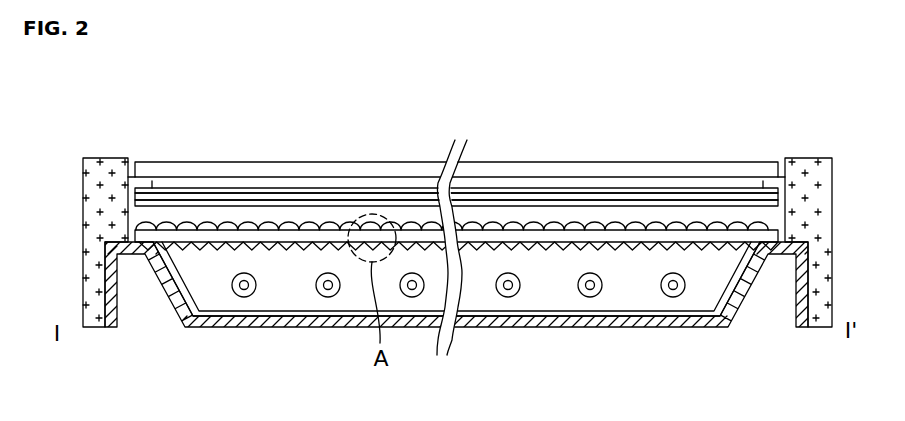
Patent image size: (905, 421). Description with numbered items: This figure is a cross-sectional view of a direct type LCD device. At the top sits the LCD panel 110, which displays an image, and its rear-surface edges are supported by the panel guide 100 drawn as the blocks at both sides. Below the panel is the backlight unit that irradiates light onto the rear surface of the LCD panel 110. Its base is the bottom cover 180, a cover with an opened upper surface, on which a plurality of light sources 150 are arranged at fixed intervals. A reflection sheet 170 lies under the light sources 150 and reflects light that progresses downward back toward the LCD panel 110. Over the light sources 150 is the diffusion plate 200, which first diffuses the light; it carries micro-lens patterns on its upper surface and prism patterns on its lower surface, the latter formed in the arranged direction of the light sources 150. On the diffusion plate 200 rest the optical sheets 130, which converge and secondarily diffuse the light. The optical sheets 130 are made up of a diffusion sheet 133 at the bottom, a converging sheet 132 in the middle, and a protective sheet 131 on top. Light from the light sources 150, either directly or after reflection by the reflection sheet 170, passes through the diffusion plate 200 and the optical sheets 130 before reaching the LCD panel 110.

The panel guide 100 is at (810, 158).
The LCD panel 110 is at (608, 172).
The optical sheets 130 is at (456, 140).
The protective sheet 131 is at (225, 191).
The converging sheet 132 is at (271, 197).
The diffusion sheet 133 is at (235, 113).
The light sources 150 is at (508, 297).
The reflection sheet 170 is at (585, 314).
The bottom cover 180 is at (655, 322).
The diffusion plate 200 is at (696, 237).